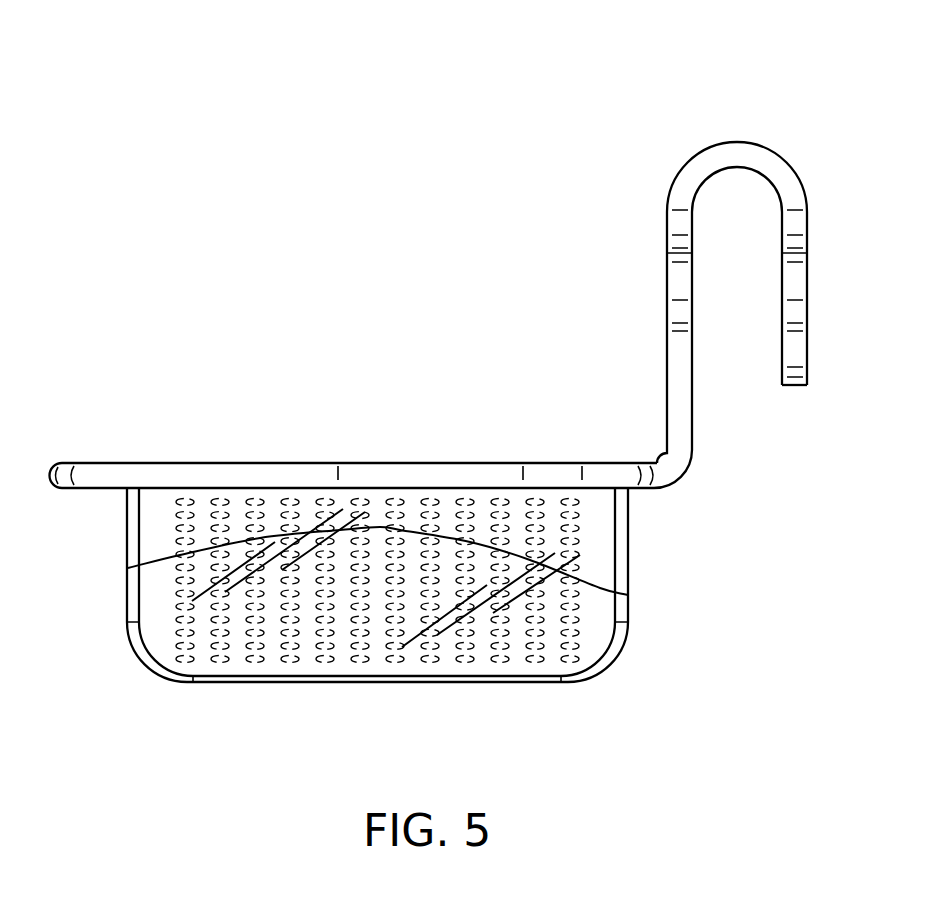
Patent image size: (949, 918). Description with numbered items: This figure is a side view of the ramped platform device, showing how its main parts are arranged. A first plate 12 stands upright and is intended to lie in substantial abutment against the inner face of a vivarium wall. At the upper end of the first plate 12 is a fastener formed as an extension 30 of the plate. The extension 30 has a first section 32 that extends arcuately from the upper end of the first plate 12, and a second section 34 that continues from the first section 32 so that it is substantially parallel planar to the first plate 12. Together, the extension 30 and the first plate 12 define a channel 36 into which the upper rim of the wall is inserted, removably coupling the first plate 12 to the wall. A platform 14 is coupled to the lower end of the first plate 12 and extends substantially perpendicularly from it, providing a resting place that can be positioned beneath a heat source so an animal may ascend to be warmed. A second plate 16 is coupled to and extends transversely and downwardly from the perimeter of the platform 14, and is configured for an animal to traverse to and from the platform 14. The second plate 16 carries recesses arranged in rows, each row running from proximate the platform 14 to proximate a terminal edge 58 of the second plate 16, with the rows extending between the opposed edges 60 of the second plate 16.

The first plate 12 is at (677, 270).
The platform 14 is at (390, 463).
The second plate 16 is at (444, 620).
The extension 30 is at (795, 235).
The first section 32 is at (735, 157).
The second section 34 is at (790, 322).
The channel 36 is at (735, 275).
The terminal edge 58 is at (437, 682).
The opposed edges 60 is at (628, 610).